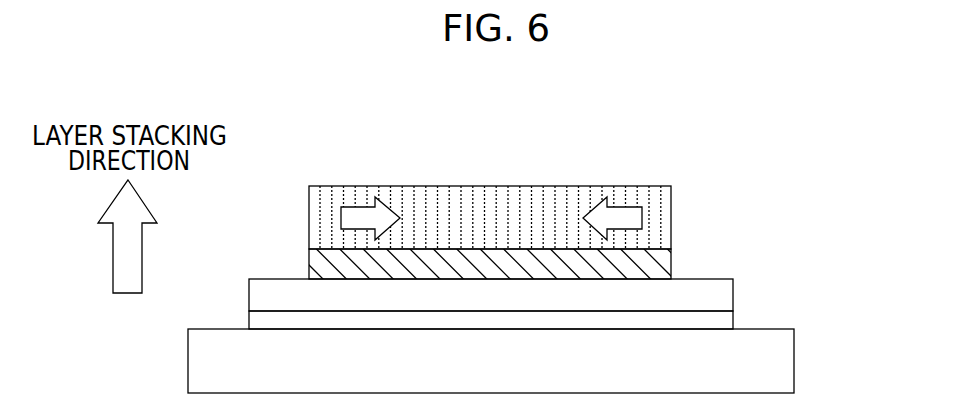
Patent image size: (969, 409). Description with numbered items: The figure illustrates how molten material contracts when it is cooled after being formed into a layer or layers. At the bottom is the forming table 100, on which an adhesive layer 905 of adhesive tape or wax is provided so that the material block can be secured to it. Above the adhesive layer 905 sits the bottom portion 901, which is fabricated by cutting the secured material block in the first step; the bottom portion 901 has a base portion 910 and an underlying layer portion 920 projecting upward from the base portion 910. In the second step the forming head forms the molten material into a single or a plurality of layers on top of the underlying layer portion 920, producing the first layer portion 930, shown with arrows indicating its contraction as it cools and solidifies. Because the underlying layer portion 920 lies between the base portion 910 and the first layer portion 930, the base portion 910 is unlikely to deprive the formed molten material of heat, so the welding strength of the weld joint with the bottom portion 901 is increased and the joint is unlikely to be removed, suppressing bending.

The forming table 100 is at (794, 363).
The adhesive layer 905 is at (733, 321).
The base portion 910 is at (733, 283).
The underlying layer portion 920 is at (671, 262).
The bottom portion 901 is at (582, 249).
The first layer portion 930 is at (671, 220).